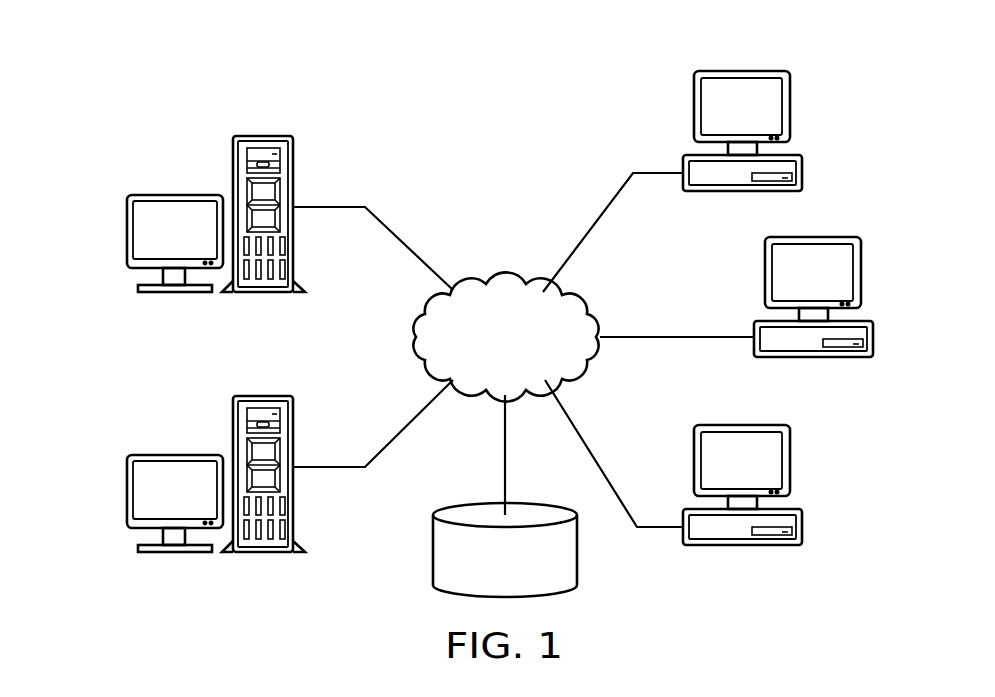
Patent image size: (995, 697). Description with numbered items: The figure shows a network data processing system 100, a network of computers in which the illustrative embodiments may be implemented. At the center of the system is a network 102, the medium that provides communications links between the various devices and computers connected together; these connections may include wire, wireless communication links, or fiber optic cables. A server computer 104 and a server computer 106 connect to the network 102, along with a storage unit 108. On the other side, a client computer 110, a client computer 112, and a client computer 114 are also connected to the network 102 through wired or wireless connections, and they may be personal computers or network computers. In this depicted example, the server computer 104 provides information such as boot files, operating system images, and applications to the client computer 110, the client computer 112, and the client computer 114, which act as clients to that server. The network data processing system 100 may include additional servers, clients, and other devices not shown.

The network data processing system 100 is at (431, 66).
The network 102 is at (478, 290).
The server computer 104 is at (127, 230).
The server computer 106 is at (127, 488).
The storage unit 108 is at (433, 553).
The client computer 110 is at (802, 163).
The client computer 112 is at (873, 347).
The client computer 114 is at (803, 535).